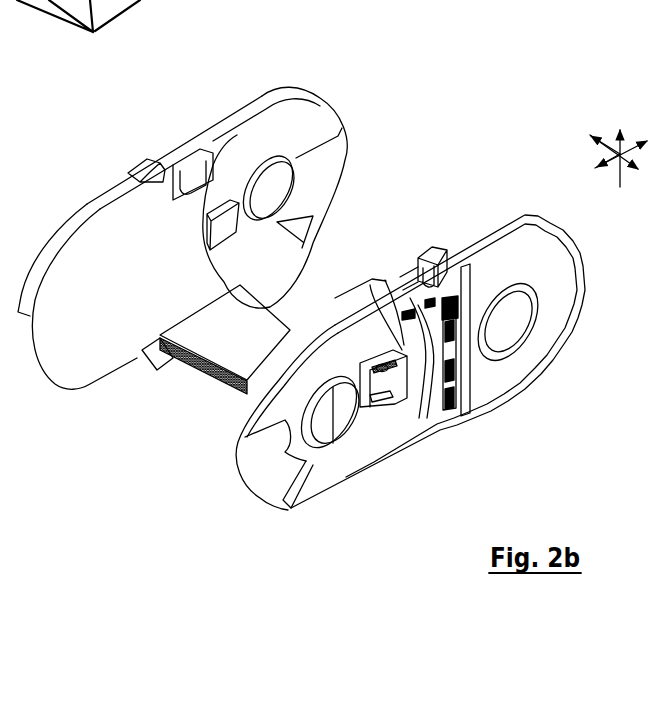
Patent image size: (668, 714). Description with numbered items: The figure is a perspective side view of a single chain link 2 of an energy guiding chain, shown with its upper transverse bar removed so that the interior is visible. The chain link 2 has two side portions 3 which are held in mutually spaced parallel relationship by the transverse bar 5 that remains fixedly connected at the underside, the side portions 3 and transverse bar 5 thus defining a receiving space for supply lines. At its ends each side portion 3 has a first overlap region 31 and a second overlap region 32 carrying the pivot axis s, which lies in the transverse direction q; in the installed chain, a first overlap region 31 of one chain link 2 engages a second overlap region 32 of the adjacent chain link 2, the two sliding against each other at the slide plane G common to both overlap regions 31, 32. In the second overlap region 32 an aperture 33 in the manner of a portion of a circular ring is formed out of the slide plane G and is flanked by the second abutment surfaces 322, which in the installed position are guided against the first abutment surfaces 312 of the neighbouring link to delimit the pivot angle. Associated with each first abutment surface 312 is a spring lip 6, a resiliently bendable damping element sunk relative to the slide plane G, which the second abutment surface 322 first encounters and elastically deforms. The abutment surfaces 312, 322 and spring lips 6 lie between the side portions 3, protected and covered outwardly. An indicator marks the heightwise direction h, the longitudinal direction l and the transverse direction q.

The chain link 2 is at (337, 289).
The side portion 3 is at (337, 289).
The transverse bar 5 is at (223, 358).
The spring lip 6 is at (372, 363).
The first overlap region 31 is at (226, 453).
The second overlap region 32 is at (345, 102).
The aperture 33 is at (328, 175).
The first abutment surface 312 is at (395, 317).
The second abutment surface 322 is at (321, 147).
The slide plane G is at (262, 122).
The pivot axis s is at (78, 32).
The heightwise direction h is at (612, 143).
The longitudinal direction l is at (626, 143).
The transverse direction q is at (624, 168).